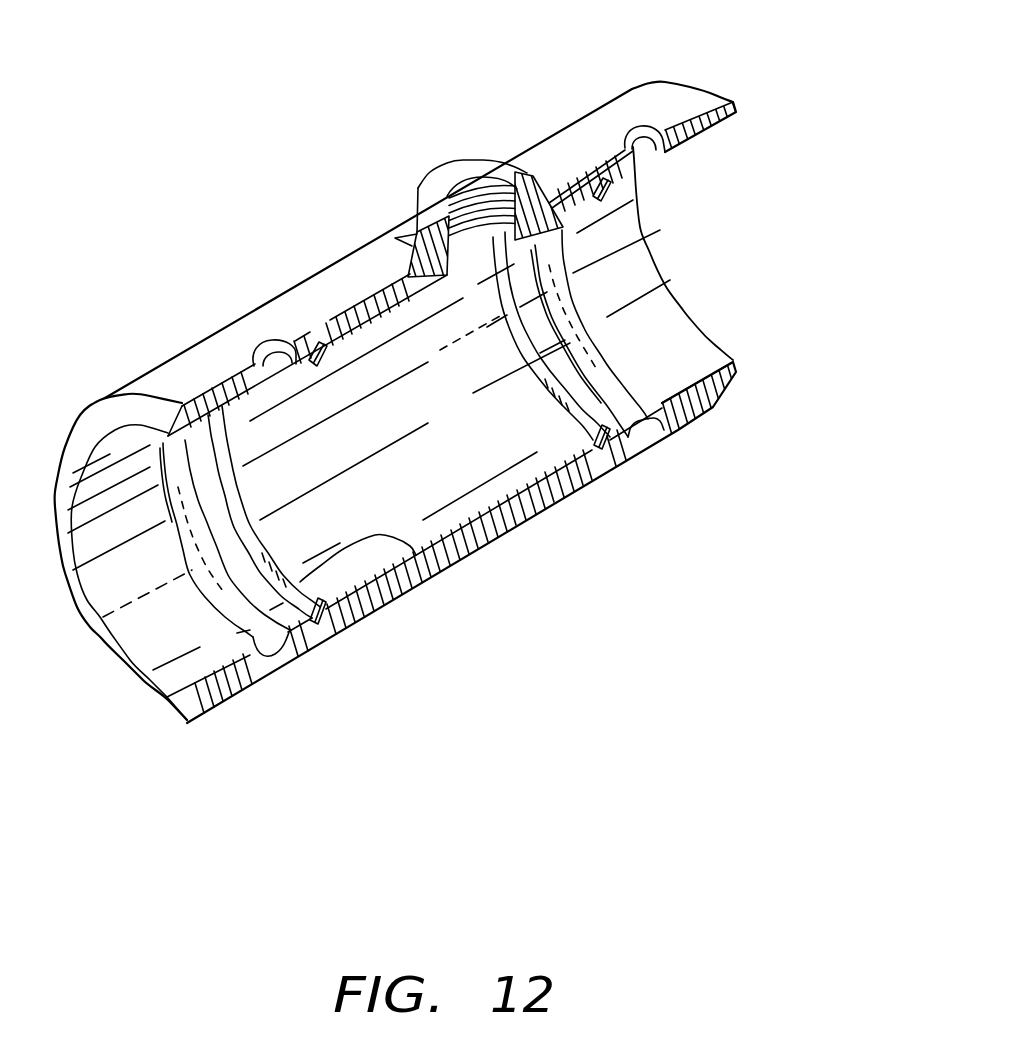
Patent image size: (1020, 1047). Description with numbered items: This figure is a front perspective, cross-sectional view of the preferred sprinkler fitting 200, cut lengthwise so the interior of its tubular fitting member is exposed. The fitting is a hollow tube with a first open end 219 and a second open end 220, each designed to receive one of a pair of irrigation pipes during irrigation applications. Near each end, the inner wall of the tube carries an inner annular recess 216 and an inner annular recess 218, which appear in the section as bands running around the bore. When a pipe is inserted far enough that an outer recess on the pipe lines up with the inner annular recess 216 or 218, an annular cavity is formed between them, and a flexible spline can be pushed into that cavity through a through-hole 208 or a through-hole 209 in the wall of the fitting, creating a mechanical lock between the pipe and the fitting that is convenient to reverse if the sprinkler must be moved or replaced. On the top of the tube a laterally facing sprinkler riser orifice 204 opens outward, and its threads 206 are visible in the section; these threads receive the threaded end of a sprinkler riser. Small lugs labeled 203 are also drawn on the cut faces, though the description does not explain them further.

The sprinkler fitting 200 is at (627, 392).
The locating pins 203 is at (612, 190).
The sprinkler riser orifice 204 is at (480, 163).
The threads 206 is at (420, 173).
The through-hole 208 is at (278, 348).
The through-hole 209 is at (647, 133).
The annular recess 216 is at (278, 653).
The annular recess 218 is at (666, 335).
The first open end 219 is at (650, 255).
The second open end 220 is at (165, 642).